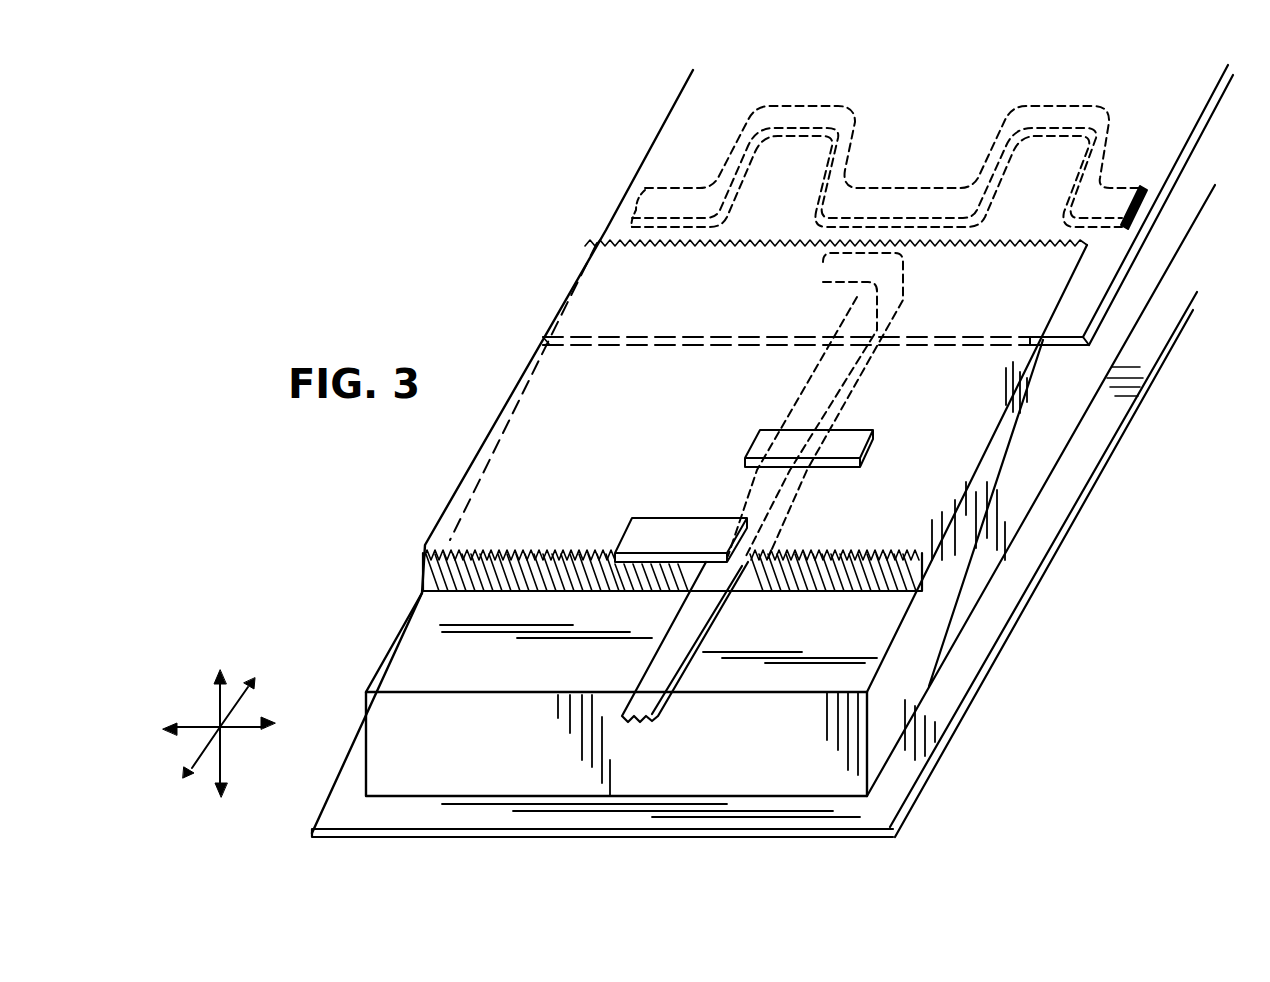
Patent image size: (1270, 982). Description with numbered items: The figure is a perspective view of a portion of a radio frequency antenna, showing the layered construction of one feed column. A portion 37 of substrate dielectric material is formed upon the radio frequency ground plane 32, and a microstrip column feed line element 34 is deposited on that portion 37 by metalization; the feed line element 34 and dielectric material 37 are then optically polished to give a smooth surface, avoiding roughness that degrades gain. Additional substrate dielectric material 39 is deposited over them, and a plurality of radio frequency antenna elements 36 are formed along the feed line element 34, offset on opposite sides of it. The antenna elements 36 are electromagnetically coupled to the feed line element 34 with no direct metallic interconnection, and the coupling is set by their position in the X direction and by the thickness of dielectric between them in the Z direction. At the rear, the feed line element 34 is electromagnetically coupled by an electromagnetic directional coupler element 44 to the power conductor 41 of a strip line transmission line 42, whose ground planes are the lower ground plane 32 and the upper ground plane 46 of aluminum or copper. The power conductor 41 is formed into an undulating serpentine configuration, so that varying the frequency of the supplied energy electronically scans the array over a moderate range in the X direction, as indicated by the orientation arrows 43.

The radio frequency ground plane 32 is at (580, 838).
The microstrip column feed line element 34 is at (660, 706).
The radio frequency antenna element 36 is at (850, 445).
The portion of substrate dielectric material 37 is at (423, 718).
The additional substrate dielectric material 39 is at (424, 566).
The power conductor 41 is at (753, 112).
The strip line transmission line 42 is at (693, 171).
The orientation arrows 43 is at (228, 734).
The electromagnetic directional coupler element 44 is at (845, 285).
The upper ground plane 46 is at (622, 193).